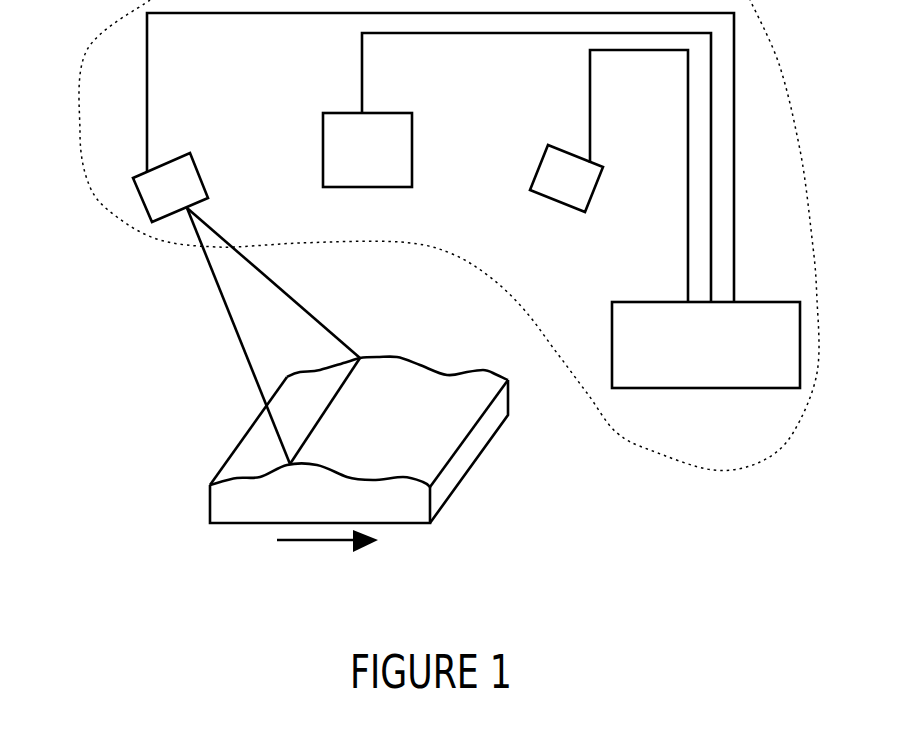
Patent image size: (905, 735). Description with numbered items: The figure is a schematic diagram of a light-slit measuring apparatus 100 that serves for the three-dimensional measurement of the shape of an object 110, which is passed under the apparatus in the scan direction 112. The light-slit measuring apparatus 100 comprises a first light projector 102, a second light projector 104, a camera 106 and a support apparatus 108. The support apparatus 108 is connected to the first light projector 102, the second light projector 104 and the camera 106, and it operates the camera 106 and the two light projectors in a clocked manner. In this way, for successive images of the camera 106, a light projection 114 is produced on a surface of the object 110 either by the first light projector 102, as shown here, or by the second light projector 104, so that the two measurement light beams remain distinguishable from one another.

The light-slit measuring apparatus 100 is at (718, 472).
The first light projector 102 is at (133, 178).
The second light projector 104 is at (600, 176).
The camera 106 is at (412, 165).
The support apparatus 108 is at (660, 388).
The object 110 is at (210, 485).
The scan direction 112 is at (282, 568).
The light projection 114 is at (347, 393).